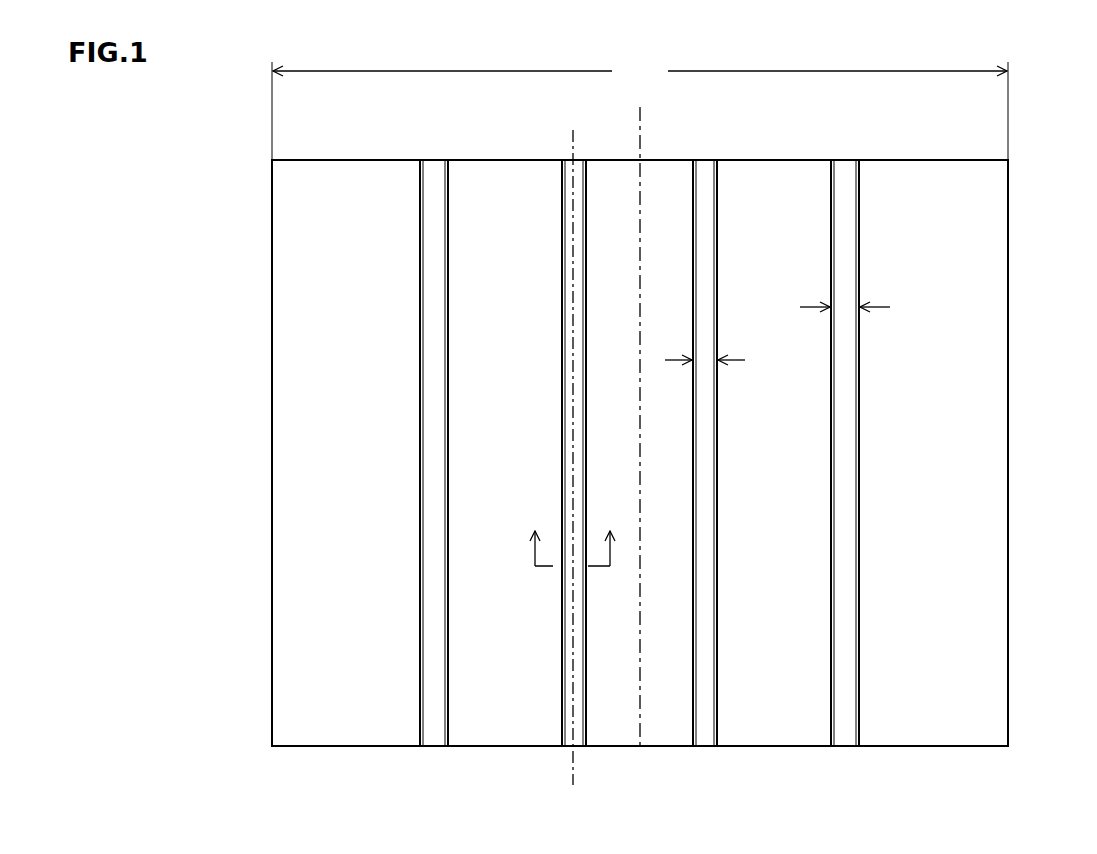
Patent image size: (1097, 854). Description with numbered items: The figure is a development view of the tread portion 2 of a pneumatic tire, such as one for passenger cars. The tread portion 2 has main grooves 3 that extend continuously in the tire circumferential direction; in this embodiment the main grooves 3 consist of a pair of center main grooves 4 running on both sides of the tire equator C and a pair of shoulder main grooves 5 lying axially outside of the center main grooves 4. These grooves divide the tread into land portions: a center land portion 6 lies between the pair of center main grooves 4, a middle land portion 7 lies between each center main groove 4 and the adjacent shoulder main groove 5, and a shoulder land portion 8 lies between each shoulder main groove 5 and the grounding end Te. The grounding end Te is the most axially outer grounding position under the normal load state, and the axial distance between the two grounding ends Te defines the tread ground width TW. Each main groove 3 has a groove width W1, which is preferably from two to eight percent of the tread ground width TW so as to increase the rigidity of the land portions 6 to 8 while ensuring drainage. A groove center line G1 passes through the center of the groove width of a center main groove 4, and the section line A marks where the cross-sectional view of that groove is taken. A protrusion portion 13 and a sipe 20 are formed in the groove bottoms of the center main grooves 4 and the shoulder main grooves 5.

The tread portion 2 is at (1039, 135).
The main groove 3 is at (641, 414).
The center main groove 4 is at (571, 190).
The shoulder main groove 5 is at (433, 192).
The center land portion 6 is at (659, 212).
The middle land portion 7 is at (497, 212).
The shoulder land portion 8 is at (334, 212).
The protrusion portion 13 is at (432, 632).
The sipe 20 is at (444, 684).
The grounding end Te is at (270, 222).
The tire equator C is at (640, 413).
The tread ground width TW is at (640, 109).
The groove width W1 is at (783, 317).
The line A- A is at (572, 533).
The groove center line G1 is at (577, 762).